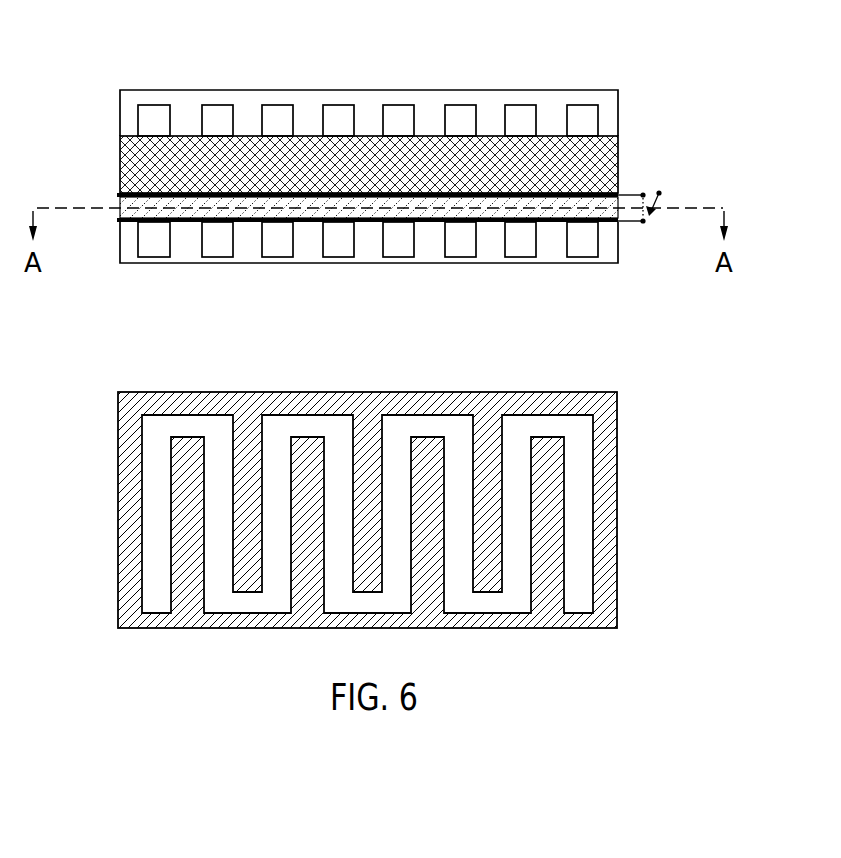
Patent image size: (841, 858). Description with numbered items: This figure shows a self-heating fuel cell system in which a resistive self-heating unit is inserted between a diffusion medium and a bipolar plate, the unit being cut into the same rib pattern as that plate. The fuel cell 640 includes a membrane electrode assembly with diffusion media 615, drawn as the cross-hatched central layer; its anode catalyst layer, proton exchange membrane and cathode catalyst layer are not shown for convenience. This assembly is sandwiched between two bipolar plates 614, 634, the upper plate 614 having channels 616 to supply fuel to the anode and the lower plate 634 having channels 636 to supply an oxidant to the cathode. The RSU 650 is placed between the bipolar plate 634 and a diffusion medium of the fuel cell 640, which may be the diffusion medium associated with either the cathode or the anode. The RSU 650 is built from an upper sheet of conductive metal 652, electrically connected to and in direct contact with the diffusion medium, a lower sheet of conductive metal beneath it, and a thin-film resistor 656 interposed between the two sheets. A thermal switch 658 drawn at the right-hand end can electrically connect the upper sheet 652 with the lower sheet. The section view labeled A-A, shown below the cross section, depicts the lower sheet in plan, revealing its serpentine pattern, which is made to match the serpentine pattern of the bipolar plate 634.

The fuel cell 640 is at (289, 72).
The bipolar plate 614 is at (618, 100).
The channels 616 is at (154, 110).
The membrane electrode assembly with diffusion media 615 is at (618, 160).
The upper sheet of conductive metal 652 is at (117, 195).
The thin-film resistor 656 is at (120, 208).
The thermal switch 658 is at (648, 218).
The RSU 650 is at (707, 192).
The bipolar plate 634 is at (618, 252).
The channels 636 is at (154, 250).